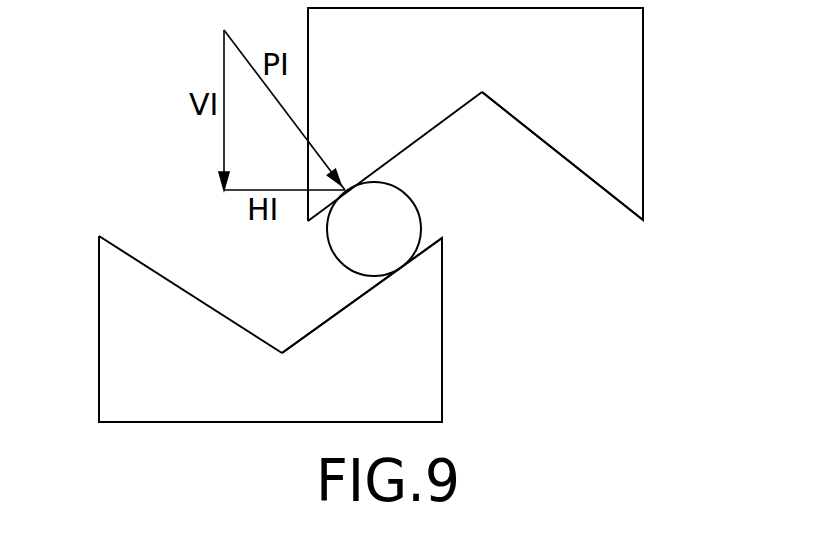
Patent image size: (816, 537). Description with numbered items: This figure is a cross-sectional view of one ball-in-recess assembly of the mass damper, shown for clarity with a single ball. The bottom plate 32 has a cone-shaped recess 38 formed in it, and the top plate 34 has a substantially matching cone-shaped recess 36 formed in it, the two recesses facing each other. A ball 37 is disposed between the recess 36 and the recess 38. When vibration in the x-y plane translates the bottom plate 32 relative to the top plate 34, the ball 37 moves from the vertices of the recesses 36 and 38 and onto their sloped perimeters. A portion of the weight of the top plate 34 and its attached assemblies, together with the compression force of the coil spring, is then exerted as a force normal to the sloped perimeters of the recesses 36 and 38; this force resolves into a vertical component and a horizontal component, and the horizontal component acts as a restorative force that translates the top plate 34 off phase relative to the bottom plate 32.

The bottom plate 32 is at (442, 358).
The top plate 34 is at (643, 47).
The cone-shaped recess 36 is at (190, 296).
The ball 37 is at (420, 208).
The cone-shaped recess 38 is at (597, 182).